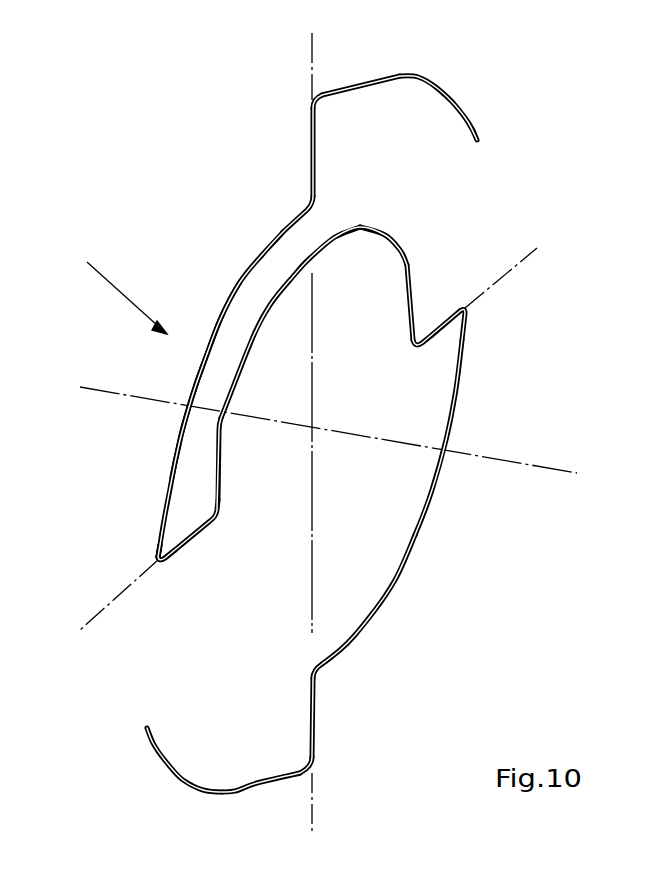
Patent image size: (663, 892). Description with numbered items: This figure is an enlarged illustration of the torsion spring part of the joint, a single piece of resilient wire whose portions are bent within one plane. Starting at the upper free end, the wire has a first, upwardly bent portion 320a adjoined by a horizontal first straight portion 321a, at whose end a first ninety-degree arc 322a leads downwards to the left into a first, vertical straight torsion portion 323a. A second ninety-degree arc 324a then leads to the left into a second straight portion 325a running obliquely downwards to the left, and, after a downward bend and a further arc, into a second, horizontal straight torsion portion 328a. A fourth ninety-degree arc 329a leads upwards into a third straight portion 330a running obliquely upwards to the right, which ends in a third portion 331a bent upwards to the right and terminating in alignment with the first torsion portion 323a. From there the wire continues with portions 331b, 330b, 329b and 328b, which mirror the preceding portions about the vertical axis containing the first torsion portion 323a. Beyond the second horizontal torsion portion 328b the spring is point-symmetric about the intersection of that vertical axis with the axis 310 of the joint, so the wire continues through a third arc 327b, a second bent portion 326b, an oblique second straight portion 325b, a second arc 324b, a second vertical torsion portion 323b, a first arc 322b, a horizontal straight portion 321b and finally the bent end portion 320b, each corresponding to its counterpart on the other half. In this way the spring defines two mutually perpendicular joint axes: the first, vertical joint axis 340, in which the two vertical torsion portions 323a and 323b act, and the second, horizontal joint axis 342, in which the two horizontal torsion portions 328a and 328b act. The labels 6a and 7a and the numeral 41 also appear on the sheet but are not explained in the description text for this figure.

The axis 310 is at (550, 465).
The first, vertical joint axis 340 is at (313, 820).
The second, horizontal joint axis 342 is at (527, 260).
The reference line 41 is at (654, 519).
The first spring arm 6a is at (197, 373).
The first arm tip 7a is at (155, 560).
The first, upwardly bent portion 320a is at (458, 103).
The horizontal first straight portion 321a is at (357, 80).
The first 90° arc 322a is at (307, 108).
The first, vertical straight torsion portion 323a is at (317, 147).
The second 90° arc 324a is at (307, 195).
The second straight portion 325a is at (240, 278).
The second, horizontal straight torsion portion 328a is at (188, 548).
The fourth 90° arc 329a is at (215, 517).
The third straight portion 330a is at (220, 468).
The third portion bent upwards to the right 331a is at (253, 337).
The third bent portion (mirror-symmetrical) 331b is at (387, 232).
The third straight portion (mirror-symmetrical) 330b is at (413, 283).
The fourth 90° arc (mirror-symmetrical) 329b is at (414, 348).
The second, horizontal straight torsion portion (mirror-symmetrical) 328b is at (443, 317).
The third 90° arc (point-symmetrical) 327b is at (468, 310).
The second bent portion (point-symmetrical) 326b is at (452, 428).
The second straight portion (point-symmetrical) 325b is at (360, 622).
The second 90° arc (point-symmetrical) 324b is at (312, 665).
The first, vertical straight torsion portion (point-symmetrical) 323b is at (317, 708).
The first 90° arc (point-symmetrical) 322b is at (317, 763).
The horizontal first straight portion (point-symmetrical) 321b is at (275, 787).
The first, upwardly bent portion (point-symmetrical) 320b is at (162, 763).